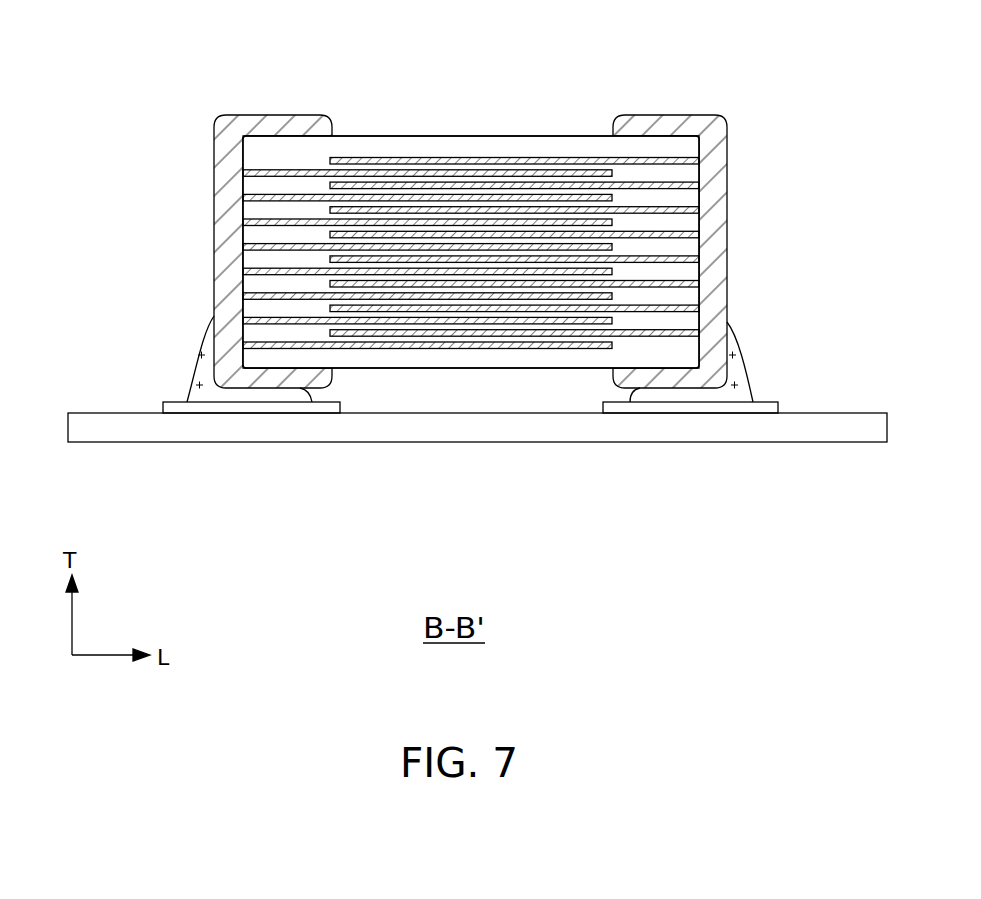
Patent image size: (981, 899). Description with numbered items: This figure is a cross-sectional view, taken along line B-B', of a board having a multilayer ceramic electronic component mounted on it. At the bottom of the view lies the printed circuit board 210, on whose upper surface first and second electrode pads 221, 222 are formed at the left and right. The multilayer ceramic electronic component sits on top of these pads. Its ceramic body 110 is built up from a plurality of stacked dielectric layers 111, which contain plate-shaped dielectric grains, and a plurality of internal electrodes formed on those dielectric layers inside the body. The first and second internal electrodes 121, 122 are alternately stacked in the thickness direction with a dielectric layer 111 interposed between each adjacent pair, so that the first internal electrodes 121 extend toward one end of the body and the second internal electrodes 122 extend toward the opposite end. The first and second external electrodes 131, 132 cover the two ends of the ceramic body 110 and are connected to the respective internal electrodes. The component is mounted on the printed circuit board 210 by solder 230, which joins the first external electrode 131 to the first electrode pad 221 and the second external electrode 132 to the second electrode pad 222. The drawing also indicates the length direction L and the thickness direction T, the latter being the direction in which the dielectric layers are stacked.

The ceramic body 110 is at (471, 190).
The dielectric layer 111 is at (425, 162).
The first internal electrode 121 is at (373, 160).
The second internal electrode 122 is at (543, 173).
The first external electrode 131 is at (287, 120).
The second external electrode 132 is at (693, 118).
The printed circuit board 210 is at (495, 433).
The first electrode pad 221 is at (283, 410).
The second electrode pad 222 is at (703, 413).
The solder 230 is at (197, 372).